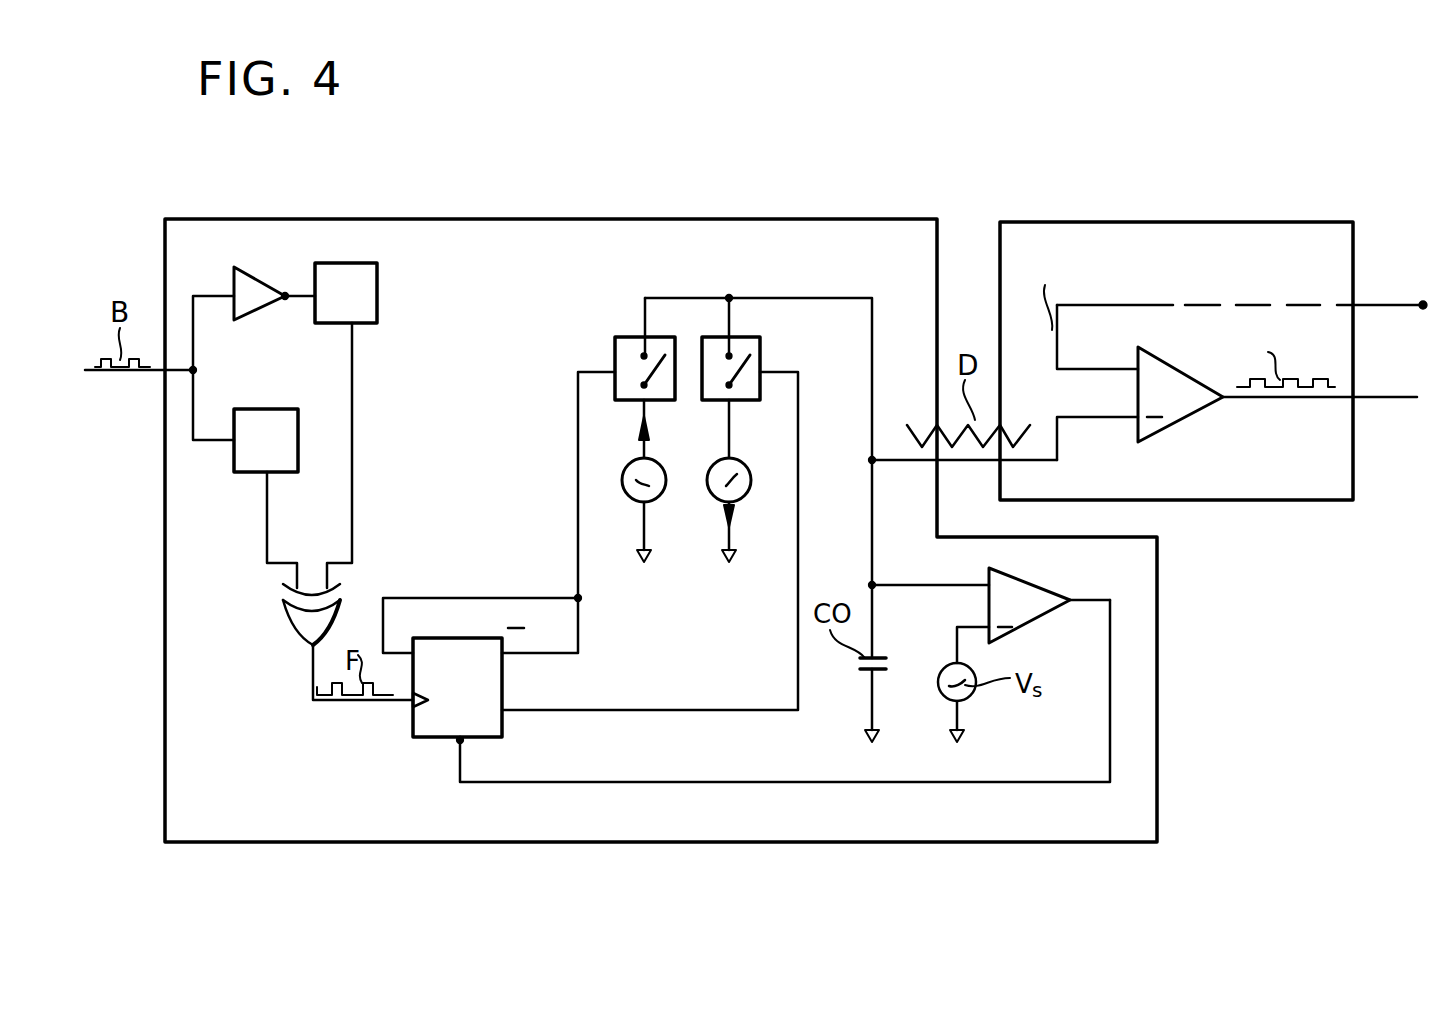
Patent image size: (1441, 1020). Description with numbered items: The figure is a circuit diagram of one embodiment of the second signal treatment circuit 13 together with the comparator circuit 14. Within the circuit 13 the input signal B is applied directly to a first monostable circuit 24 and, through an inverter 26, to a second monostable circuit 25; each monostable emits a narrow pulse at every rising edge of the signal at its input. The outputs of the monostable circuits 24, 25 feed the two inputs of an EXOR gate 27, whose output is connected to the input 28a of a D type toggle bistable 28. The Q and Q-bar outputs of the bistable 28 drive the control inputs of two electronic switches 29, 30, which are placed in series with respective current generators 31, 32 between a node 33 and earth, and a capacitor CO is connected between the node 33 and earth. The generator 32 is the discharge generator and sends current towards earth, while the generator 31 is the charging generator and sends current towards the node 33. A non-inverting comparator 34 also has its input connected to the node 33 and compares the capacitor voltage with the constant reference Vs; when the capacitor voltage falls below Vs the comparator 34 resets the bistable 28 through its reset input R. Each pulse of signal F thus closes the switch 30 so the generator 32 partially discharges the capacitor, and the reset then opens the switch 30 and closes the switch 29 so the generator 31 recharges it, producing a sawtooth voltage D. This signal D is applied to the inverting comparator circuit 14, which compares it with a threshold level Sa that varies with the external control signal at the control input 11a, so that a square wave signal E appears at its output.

The circuit 13 is at (508, 240).
The comparator circuit 14 is at (1190, 243).
The control input 11a is at (1422, 300).
The monostable circuit 24 is at (248, 462).
The monostable circuit 25 is at (373, 298).
The inverter 26 is at (245, 290).
The EXOR gate 27 is at (305, 625).
The D type toggle bistable 28 is at (440, 650).
The input of the bistable 28a is at (410, 704).
The electronic switch 29 is at (620, 345).
The electronic switch 30 is at (762, 342).
The current generator 31 is at (625, 480).
The current generator 32 is at (750, 470).
The node 33 is at (729, 297).
The comparator 34 is at (1035, 603).